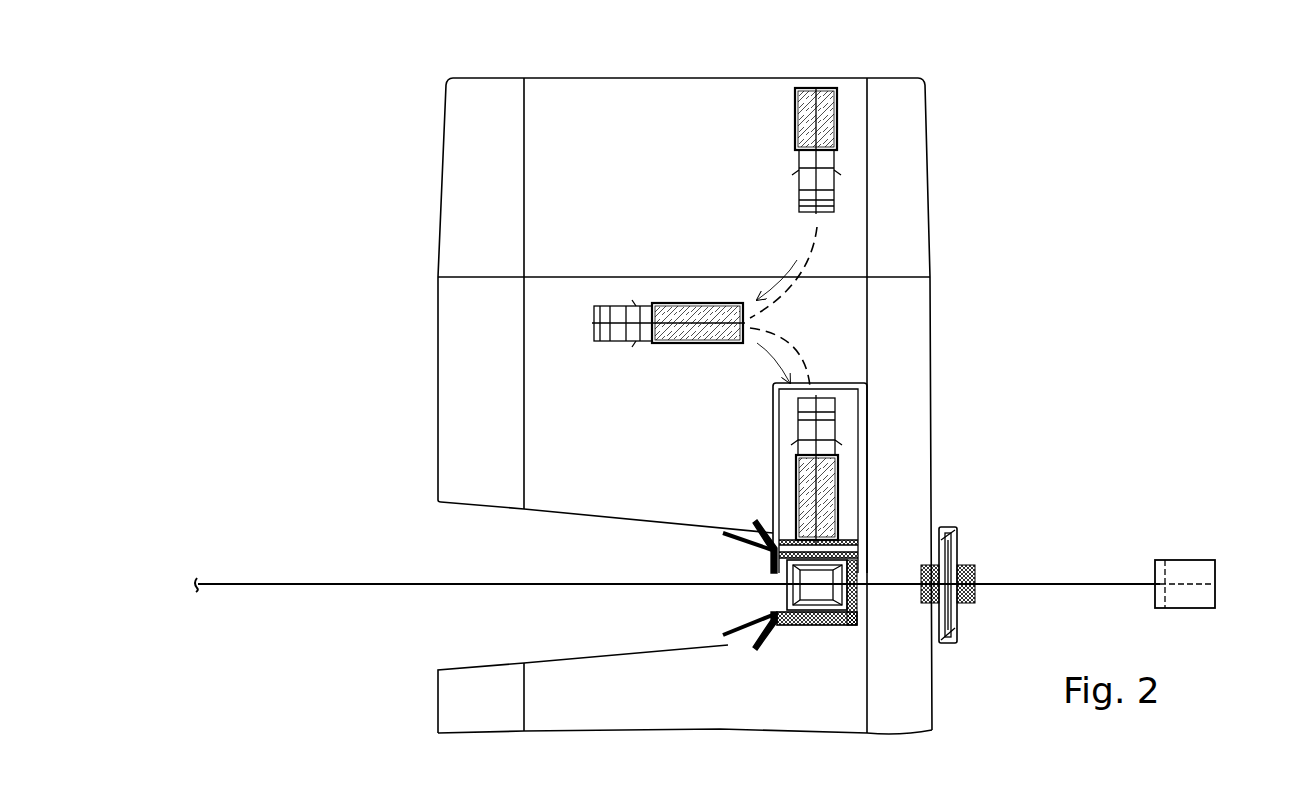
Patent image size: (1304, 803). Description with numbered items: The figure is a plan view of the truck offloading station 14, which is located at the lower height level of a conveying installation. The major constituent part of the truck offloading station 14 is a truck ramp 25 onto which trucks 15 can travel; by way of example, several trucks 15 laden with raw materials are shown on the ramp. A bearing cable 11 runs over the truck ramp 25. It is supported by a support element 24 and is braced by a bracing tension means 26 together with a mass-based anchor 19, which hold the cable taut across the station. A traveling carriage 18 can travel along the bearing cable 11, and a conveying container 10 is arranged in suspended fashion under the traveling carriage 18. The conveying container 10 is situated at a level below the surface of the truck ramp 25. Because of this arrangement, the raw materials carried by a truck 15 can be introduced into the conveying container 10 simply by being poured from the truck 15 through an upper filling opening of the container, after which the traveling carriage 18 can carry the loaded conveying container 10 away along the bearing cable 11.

The conveying container 10 is at (812, 597).
The bearing cable 11 is at (300, 580).
The truck offloading station 14 is at (323, 302).
The truck 15 is at (628, 310).
The traveling carriage 18 is at (763, 593).
The mass-based anchor 19 is at (1185, 567).
The support element 24 is at (952, 553).
The truck ramp 25 is at (845, 333).
The bracing tension means 26 is at (1052, 582).